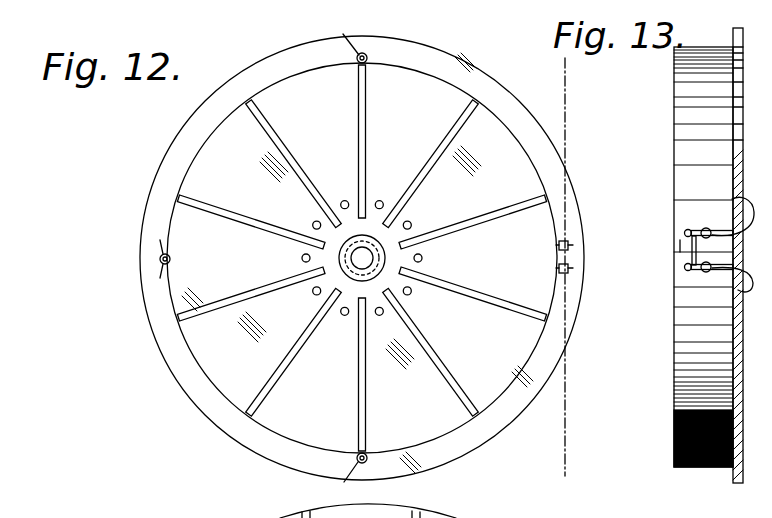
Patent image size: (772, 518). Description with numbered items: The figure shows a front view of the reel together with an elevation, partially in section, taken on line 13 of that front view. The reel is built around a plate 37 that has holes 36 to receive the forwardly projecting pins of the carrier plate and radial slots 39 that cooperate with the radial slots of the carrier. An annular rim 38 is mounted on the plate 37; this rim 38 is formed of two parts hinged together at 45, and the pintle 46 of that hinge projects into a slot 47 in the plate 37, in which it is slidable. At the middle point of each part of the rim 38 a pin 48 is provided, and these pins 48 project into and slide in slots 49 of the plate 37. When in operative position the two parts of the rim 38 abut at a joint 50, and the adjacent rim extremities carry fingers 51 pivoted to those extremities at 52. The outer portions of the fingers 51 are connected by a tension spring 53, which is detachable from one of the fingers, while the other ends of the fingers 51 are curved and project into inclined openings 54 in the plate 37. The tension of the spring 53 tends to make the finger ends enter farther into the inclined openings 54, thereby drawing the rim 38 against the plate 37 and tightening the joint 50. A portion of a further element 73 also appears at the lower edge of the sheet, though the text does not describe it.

In FIG. 12, the section line 13 is at (567, 148).
In FIG. 12, the holes 36 is at (411, 224).
In FIG. 12, the plate 37 is at (425, 88).
In FIG. 13, the plate 37 is at (734, 32).
In FIG. 12, the annular rim 38 is at (392, 64).
In FIG. 13, the annular rim 38 is at (684, 88).
In FIG. 12, the radial slots 39 is at (442, 153).
In FIG. 12, the hinge 45 is at (162, 254).
In FIG. 12, the pintle 46 is at (162, 264).
In FIG. 12, the slot 47 is at (158, 259).
In FIG. 12, the pin 48 is at (364, 54).
In FIG. 12, the slots 49 is at (352, 40).
In FIG. 12, the joint 50 is at (558, 250).
In FIG. 13, the joint 50 is at (680, 245).
In FIG. 12, the fingers 51 is at (568, 245).
In FIG. 13, the fingers 51 is at (712, 228).
In FIG. 13, the pivot 52 is at (690, 270).
In FIG. 13, the tension spring 53 is at (692, 256).
In FIG. 13, the inclined openings 54 is at (746, 205).
In FIG. 12, the rim segment 73 is at (466, 516).